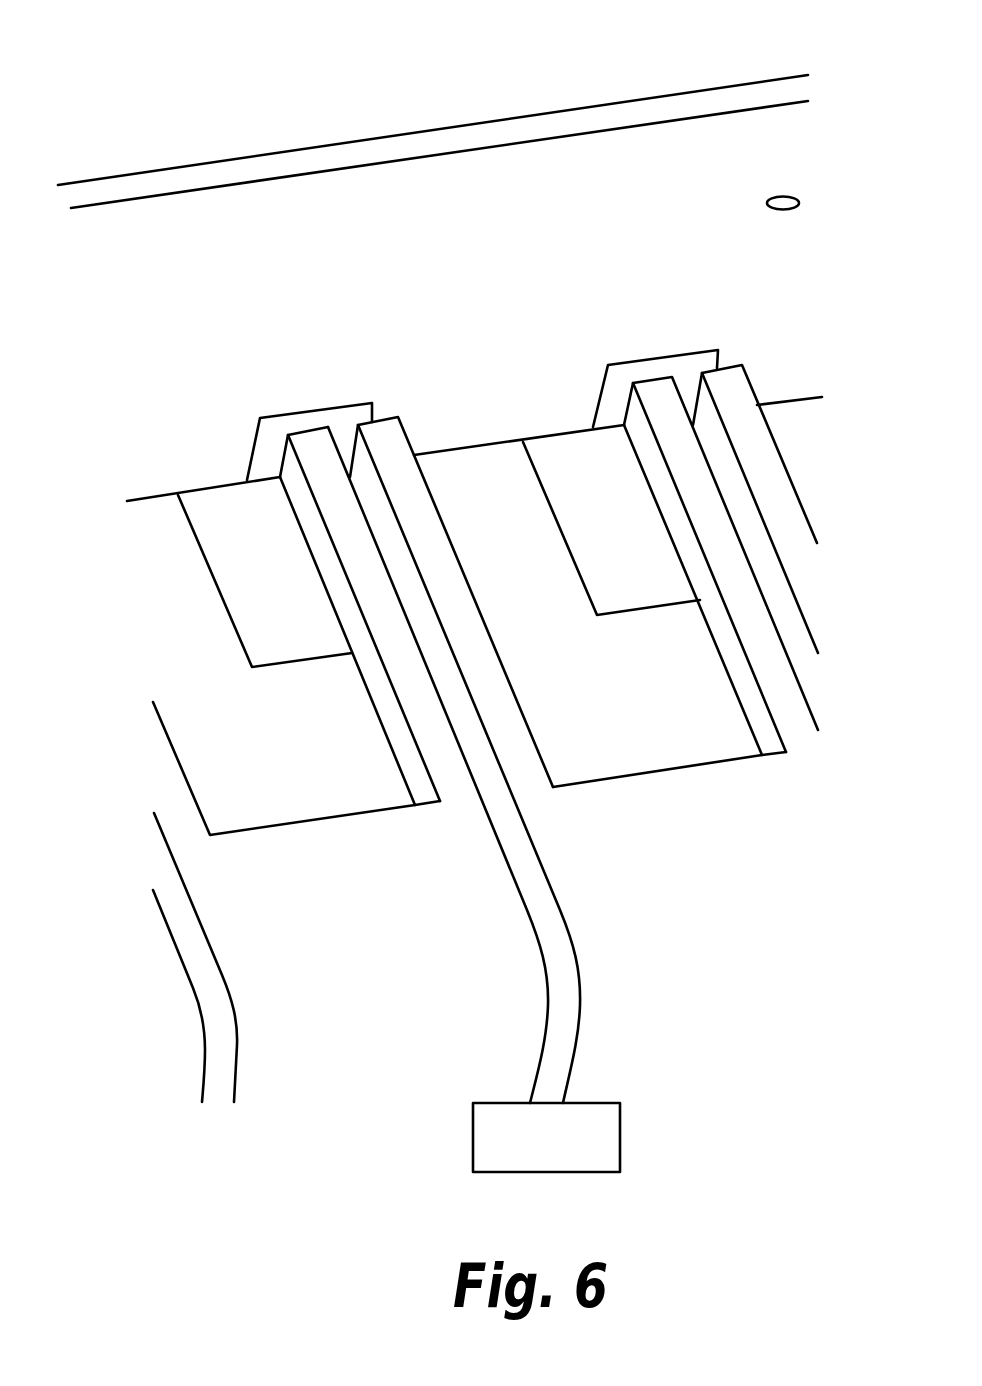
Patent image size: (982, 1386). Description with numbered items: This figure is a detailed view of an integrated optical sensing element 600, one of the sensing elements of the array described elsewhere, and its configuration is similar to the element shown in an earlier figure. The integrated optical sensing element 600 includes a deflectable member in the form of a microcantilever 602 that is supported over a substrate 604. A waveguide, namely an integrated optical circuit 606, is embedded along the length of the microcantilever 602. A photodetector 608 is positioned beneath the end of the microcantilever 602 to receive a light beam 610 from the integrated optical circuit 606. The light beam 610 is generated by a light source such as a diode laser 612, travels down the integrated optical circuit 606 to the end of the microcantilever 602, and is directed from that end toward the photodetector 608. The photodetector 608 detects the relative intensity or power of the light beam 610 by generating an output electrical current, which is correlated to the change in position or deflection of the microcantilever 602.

The integrated optical sensing element 600 is at (498, 97).
The microcantilever 602 is at (347, 427).
The substrate 604 is at (797, 196).
The integrated optical circuit 606 is at (437, 742).
The photodetector 608 is at (252, 608).
The light beam 610 is at (273, 455).
The diode laser 612 is at (568, 1155).